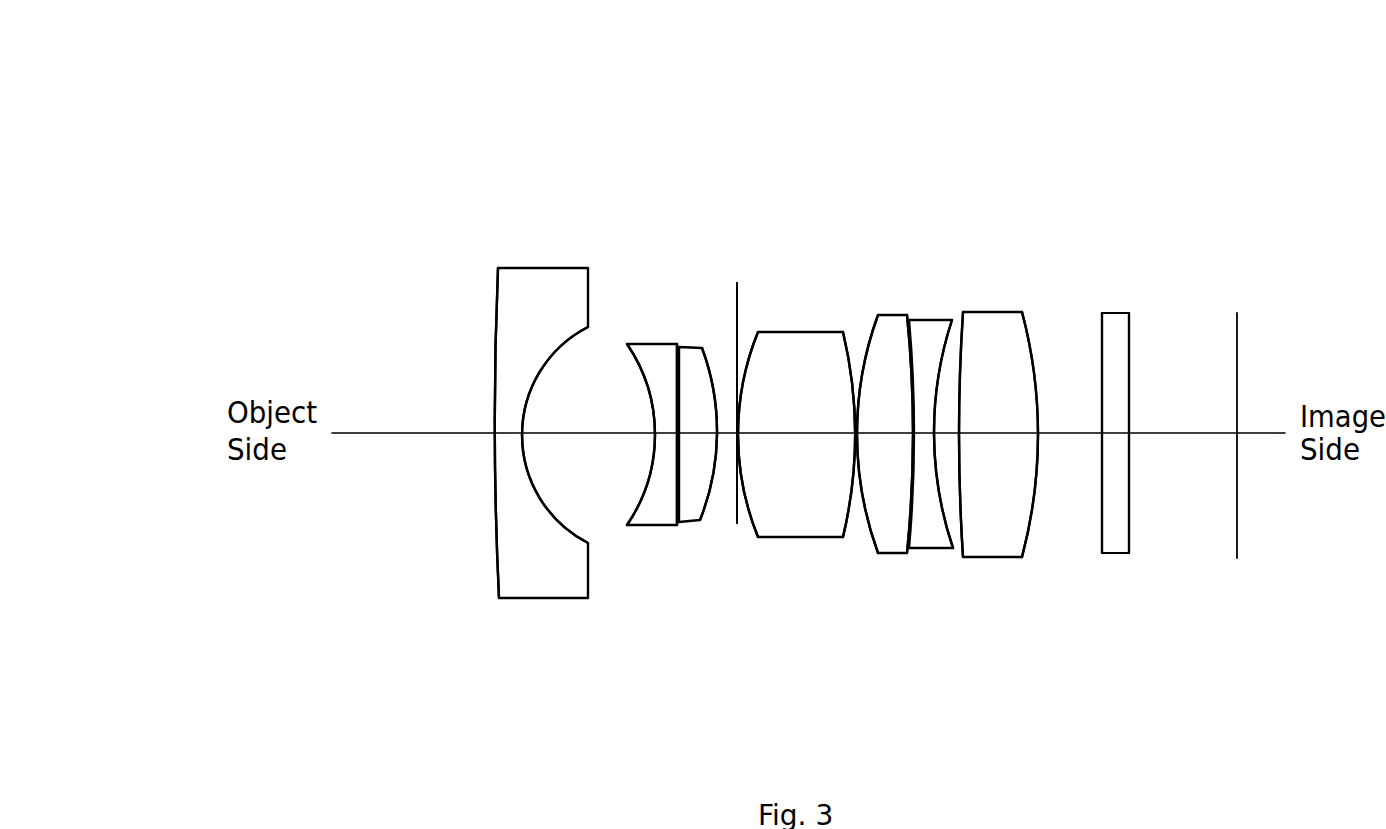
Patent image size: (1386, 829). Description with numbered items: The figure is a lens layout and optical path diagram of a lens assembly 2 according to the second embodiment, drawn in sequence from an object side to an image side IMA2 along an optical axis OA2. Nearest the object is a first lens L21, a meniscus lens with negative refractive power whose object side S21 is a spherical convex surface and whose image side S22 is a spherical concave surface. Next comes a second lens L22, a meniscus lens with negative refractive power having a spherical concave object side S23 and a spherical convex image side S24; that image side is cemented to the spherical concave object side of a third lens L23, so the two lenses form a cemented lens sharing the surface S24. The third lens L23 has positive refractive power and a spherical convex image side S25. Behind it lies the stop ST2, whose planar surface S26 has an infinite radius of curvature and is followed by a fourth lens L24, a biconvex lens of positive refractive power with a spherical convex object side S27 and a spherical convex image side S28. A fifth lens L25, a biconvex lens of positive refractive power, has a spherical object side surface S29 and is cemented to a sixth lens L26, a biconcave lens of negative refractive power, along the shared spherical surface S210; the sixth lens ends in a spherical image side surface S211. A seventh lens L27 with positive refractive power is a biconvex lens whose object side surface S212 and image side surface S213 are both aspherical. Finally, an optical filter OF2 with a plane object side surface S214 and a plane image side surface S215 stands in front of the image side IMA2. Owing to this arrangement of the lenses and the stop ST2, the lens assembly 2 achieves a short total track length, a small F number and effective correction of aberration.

The lens assembly 2 is at (231, 94).
The optical axis OA2 is at (373, 433).
The first lens L21 is at (532, 268).
The second lens L22 is at (648, 340).
The third lens L23 is at (683, 340).
The stop ST2 is at (737, 283).
The fourth lens L24 is at (800, 332).
The fifth lens L25 is at (893, 315).
The sixth lens L26 is at (930, 320).
The seventh lens L27 is at (1003, 312).
The optical filter OF2 is at (1115, 313).
The image side IMA2 is at (1237, 313).
The object side surface of the first lens S21 is at (494, 520).
The image side surface of the first lens S22 is at (557, 523).
The object side surface of the second lens S23 is at (645, 500).
The cemented surface of the second and third lenses S24 is at (677, 505).
The image side surface of the third lens S25 is at (708, 497).
The stop surface S26 is at (737, 523).
The object side surface of the fourth lens S27 is at (747, 500).
The image side surface of the fourth lens S28 is at (848, 497).
The object side surface of the fifth lens S29 is at (868, 517).
The cemented surface of the fifth and sixth lenses S210 is at (910, 510).
The image side surface of the sixth lens S211 is at (946, 520).
The object side surface of the seventh lens S212 is at (962, 500).
The image side surface of the seventh lens S213 is at (1036, 480).
The object side surface of the optical filter S214 is at (1102, 530).
The image side surface of the optical filter S215 is at (1129, 493).